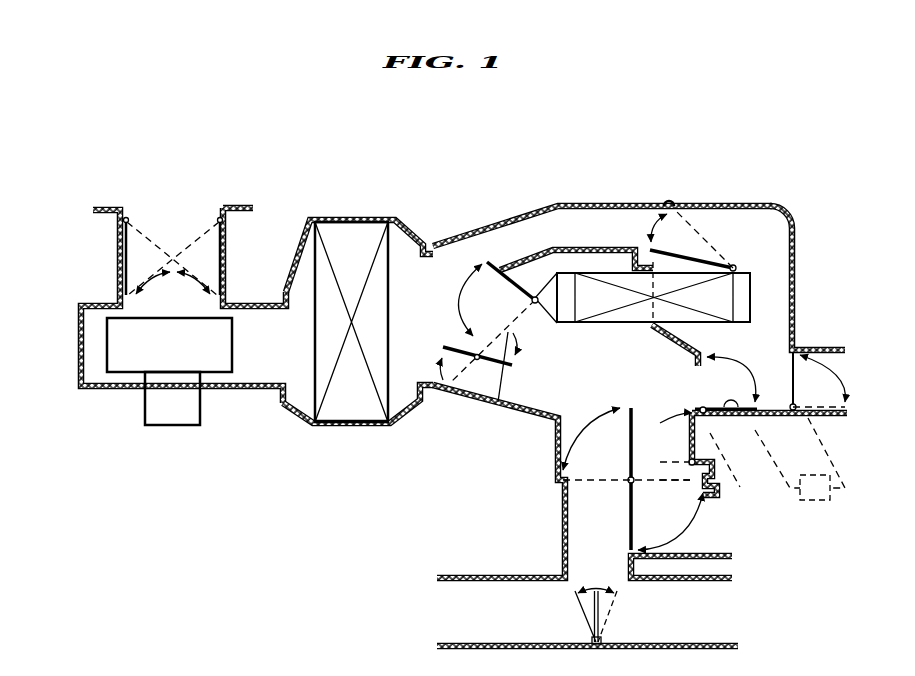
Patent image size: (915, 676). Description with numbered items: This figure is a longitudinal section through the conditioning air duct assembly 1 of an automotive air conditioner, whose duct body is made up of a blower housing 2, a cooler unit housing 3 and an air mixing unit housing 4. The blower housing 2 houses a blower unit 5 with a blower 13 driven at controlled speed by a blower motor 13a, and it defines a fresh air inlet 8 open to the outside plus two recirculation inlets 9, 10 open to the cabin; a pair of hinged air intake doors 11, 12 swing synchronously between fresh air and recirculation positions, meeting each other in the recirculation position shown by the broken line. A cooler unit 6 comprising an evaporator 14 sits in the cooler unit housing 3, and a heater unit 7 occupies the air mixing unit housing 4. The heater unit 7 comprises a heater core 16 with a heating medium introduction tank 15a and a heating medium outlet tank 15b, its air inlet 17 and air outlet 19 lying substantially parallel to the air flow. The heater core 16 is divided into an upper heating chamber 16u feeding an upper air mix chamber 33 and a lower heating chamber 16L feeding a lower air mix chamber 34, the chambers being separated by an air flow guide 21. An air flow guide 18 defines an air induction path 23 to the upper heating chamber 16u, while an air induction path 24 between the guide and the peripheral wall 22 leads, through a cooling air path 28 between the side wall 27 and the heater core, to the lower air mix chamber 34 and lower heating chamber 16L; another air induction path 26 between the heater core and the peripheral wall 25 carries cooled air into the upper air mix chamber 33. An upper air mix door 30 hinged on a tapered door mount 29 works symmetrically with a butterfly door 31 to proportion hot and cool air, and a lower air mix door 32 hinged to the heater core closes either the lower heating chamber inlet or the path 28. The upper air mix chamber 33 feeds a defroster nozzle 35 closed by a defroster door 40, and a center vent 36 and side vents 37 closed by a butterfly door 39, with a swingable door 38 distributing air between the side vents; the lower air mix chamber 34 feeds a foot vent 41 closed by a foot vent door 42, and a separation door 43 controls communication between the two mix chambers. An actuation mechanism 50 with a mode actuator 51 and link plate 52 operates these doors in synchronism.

The conditioning air duct assembly 1 is at (520, 178).
The blower housing 2 is at (163, 336).
The cooler unit housing 3 is at (320, 431).
The air mixing unit housing 4 is at (660, 183).
The blower unit 5 is at (83, 393).
The cooler unit 6 is at (350, 431).
The heater unit 7 is at (728, 202).
The fresh air inlet 8 is at (178, 222).
The recirculation inlet 9 is at (122, 247).
The recirculation inlet 10 is at (226, 278).
The air intake door 11 is at (125, 270).
The air intake door 12 is at (224, 252).
The blower 13 is at (117, 350).
The blower motor 13a is at (195, 402).
The evaporator 14 is at (362, 232).
The heating medium introduction tank 15a is at (565, 313).
The heating medium outlet tank 15b is at (747, 288).
The heater core 16 is at (722, 297).
The upper heating chamber 16u is at (600, 307).
The lower heating chamber 16L is at (690, 315).
The air inlet 17 is at (628, 265).
The air flow guide 18 is at (575, 240).
The air outlet 19 is at (635, 325).
The air flow guide 21 is at (673, 350).
The peripheral wall 22 is at (510, 218).
The air induction path 23 is at (530, 265).
The air induction path 24 is at (595, 223).
The peripheral wall 25 is at (523, 413).
The air induction path 26 is at (484, 362).
The side wall 27 is at (797, 240).
The cooling air path 28 is at (765, 262).
The door mount 29 is at (547, 303).
The upper air mix door 30 is at (492, 322).
The butterfly door 31 is at (473, 372).
The lower air mix door 32 is at (686, 243).
The upper air mix chamber 33 is at (613, 378).
The lower air mix chamber 34 is at (772, 373).
The defroster nozzle 35 is at (713, 433).
The center vent 36 is at (710, 515).
The side vents 37 is at (443, 608).
The swingable door 38 is at (593, 607).
The butterfly door 39 is at (628, 512).
The defroster door 40 is at (720, 458).
The foot vent 41 is at (847, 367).
The foot vent door 42 is at (810, 418).
The separation door 43 is at (750, 419).
The actuation mechanism 50 is at (838, 493).
The mode actuator 51 is at (813, 500).
The link plate 52 is at (770, 490).